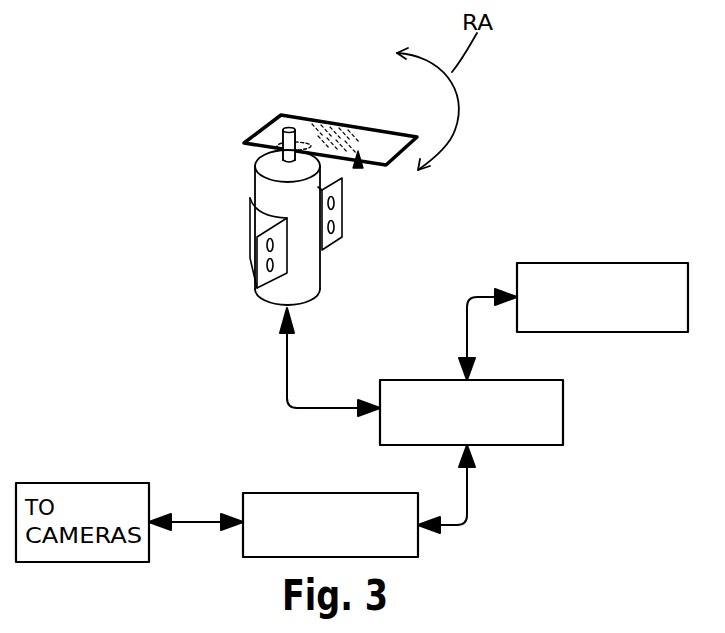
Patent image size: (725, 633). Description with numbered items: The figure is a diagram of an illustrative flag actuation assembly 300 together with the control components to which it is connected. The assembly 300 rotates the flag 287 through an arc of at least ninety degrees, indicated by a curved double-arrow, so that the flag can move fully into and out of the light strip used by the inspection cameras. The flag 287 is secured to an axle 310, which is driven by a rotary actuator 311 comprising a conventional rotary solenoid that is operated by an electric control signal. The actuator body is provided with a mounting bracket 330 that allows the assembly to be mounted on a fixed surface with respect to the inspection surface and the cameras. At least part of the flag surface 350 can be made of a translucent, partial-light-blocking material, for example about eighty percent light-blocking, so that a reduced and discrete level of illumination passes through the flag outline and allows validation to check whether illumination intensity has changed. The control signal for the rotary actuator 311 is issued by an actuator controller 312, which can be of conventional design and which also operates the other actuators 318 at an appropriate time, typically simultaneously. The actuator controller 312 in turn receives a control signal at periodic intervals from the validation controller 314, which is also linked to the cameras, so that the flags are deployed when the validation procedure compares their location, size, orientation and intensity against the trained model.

The flag actuation assembly 300 is at (332, 85).
The flag 287 is at (307, 125).
The axle 310 is at (272, 163).
The rotary actuator 311 is at (236, 188).
The mounting bracket 330 is at (340, 215).
The flag surface 350 is at (358, 168).
The actuator controller 312 is at (378, 422).
The validation controller 314 is at (282, 492).
The other actuators 318 is at (588, 333).